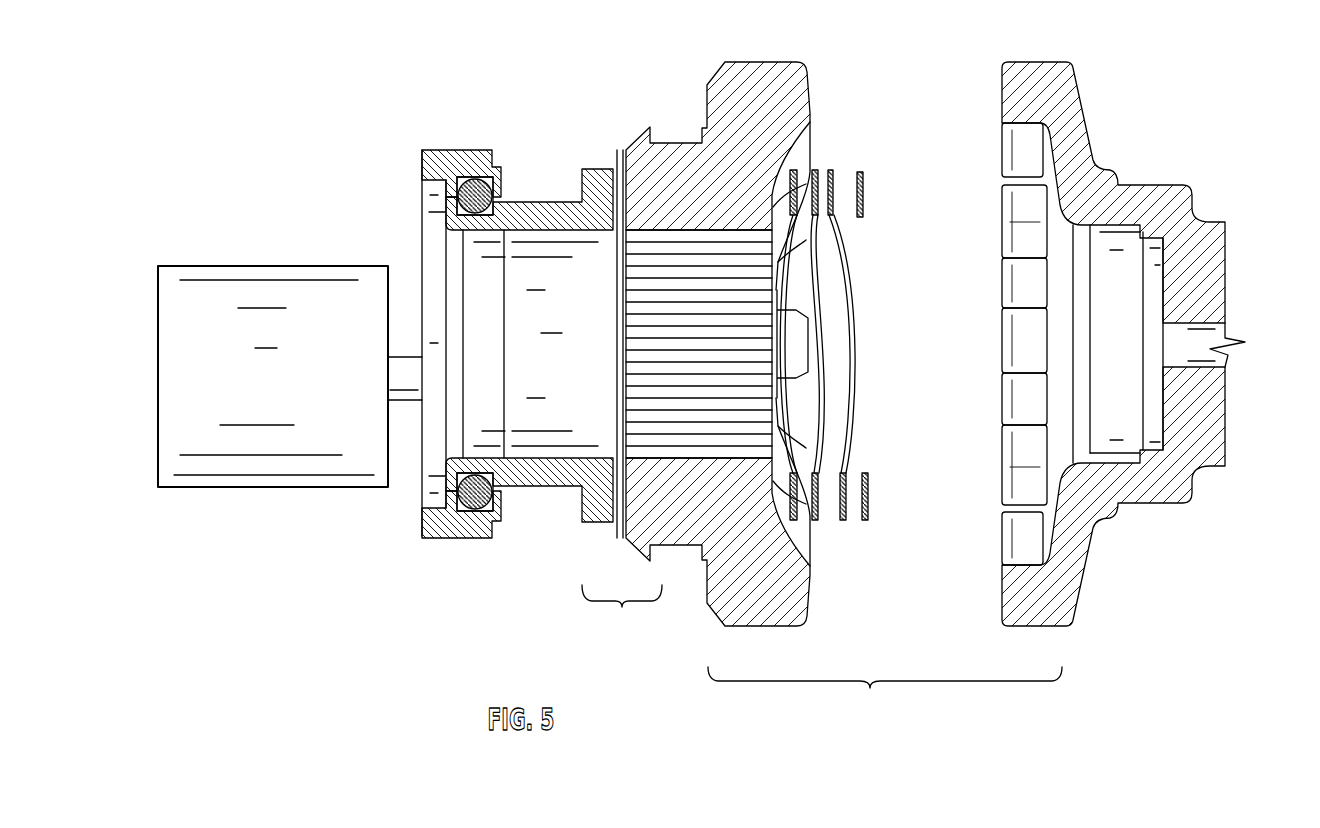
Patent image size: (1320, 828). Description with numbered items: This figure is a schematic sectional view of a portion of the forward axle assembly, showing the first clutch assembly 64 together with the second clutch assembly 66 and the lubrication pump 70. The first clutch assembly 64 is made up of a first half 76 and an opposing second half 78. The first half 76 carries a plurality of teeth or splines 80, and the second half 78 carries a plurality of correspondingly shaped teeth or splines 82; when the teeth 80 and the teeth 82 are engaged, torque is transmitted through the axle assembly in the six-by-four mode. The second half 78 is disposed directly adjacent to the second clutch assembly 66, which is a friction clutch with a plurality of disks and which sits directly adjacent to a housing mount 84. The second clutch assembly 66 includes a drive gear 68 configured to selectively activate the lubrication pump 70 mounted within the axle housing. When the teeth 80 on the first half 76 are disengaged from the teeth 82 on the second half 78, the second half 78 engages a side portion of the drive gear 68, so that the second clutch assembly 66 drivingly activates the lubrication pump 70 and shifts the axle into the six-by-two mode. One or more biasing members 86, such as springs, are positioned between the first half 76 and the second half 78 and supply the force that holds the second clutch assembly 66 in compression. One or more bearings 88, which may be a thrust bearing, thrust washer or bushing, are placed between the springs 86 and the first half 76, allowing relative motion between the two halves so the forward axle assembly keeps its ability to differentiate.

The first clutch assembly 64 is at (885, 692).
The second clutch assembly 66 is at (622, 394).
The drive gear 68 is at (540, 486).
The lubrication pump 70 is at (204, 266).
The first half 76 is at (1150, 205).
The second half 78 is at (735, 82).
The teeth or splines 80 is at (1000, 217).
The teeth or splines 82 is at (800, 343).
The housing mount 84 is at (468, 150).
The biasing members 86 is at (818, 511).
The bearings 88 is at (860, 171).